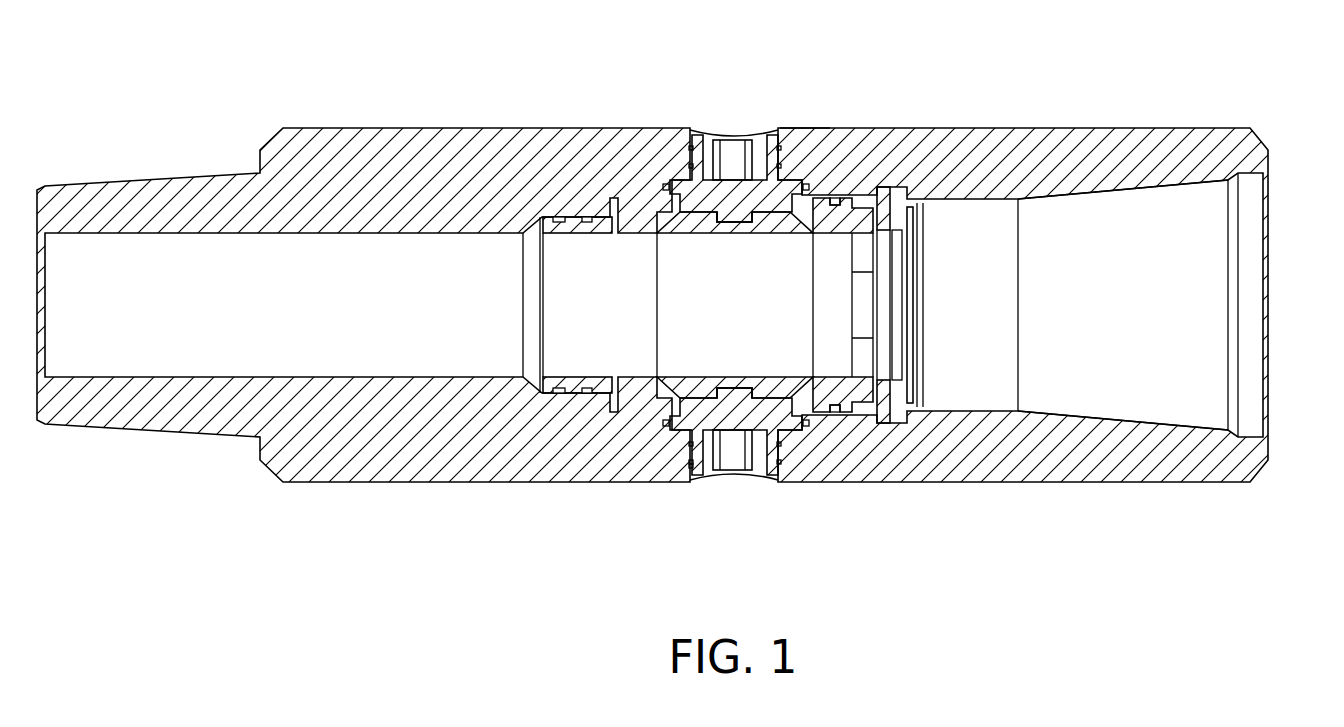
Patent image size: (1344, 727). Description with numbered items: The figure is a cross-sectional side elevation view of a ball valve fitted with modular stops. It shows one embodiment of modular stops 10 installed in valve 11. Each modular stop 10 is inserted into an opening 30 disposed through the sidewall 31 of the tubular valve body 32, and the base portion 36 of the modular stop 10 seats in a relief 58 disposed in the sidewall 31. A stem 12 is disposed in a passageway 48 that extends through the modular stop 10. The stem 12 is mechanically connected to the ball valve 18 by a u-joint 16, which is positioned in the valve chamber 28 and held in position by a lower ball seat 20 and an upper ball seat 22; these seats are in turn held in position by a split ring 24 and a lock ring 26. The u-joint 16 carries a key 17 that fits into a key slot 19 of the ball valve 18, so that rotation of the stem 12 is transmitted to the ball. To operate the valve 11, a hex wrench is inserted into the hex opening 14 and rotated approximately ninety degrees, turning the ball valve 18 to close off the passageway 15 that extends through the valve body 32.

The modular stop 10 is at (690, 183).
The valve 11 is at (685, 307).
The stem 12 is at (755, 165).
The hex opening 14 is at (742, 170).
The passageway 15 is at (1140, 257).
The u-joint 16 is at (728, 165).
The key 17 is at (722, 236).
The ball valve 18 is at (700, 466).
The key slot 19 is at (745, 236).
The lower ball seat 20 is at (640, 413).
The upper ball seat 22 is at (868, 200).
The split ring 24 is at (883, 425).
The lock ring 26 is at (898, 420).
The valve chamber 28 is at (668, 207).
The opening 30 is at (705, 140).
The sidewall 31 is at (805, 121).
The tubular valve body 32 is at (975, 135).
The base portion 36 is at (840, 205).
The passageway 48 is at (772, 148).
The relief 58 is at (806, 186).